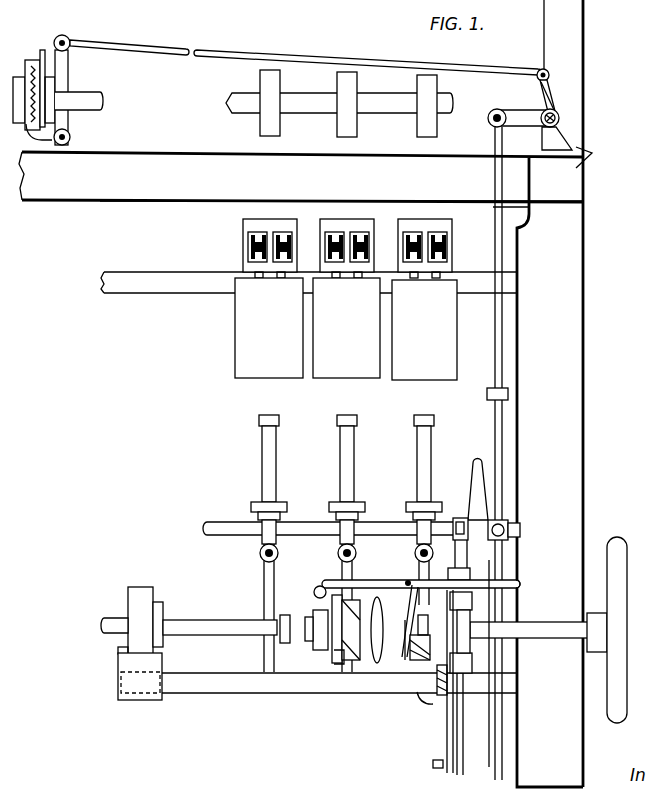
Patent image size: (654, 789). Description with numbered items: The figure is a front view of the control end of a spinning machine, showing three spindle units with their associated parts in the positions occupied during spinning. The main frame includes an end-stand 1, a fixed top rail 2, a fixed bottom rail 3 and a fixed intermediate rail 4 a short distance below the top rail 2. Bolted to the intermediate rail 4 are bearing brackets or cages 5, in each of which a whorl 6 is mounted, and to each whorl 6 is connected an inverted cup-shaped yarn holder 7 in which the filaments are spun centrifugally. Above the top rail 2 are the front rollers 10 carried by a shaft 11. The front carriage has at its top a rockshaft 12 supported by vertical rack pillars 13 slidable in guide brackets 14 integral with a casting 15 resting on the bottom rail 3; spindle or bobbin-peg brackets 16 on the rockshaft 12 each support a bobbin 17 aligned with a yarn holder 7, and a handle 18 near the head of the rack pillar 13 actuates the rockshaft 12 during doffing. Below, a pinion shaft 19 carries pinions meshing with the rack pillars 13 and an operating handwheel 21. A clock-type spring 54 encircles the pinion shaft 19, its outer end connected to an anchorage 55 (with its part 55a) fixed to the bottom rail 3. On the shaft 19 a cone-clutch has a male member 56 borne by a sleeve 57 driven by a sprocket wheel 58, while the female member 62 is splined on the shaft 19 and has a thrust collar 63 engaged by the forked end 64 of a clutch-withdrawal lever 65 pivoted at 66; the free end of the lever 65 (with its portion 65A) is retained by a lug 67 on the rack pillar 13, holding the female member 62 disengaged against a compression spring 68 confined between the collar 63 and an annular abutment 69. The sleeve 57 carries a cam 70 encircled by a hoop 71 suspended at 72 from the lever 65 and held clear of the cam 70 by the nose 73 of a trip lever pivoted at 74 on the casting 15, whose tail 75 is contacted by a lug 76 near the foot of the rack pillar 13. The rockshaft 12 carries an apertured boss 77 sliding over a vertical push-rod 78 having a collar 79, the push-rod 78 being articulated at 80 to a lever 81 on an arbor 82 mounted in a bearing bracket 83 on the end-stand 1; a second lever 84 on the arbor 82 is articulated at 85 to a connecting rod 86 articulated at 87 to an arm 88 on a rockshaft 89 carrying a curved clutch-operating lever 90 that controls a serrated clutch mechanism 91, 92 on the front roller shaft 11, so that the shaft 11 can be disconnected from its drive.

The end-stand 1 is at (592, 157).
The top rail 2 is at (151, 194).
The bottom rail 3 is at (167, 694).
The intermediate rail 4 is at (197, 283).
The bearing bracket or cage 5 is at (273, 227).
The whorl 6 is at (287, 246).
The yarn holder 7 is at (270, 367).
The front rollers 10 is at (268, 125).
The front roller shaft 11 is at (233, 105).
The rockshaft 12 is at (225, 525).
The rack pillar 13 is at (470, 642).
The guide bracket 14 is at (472, 601).
The casting 15 is at (455, 673).
The spindle or bobbin-peg bracket 16 is at (282, 520).
The bobbin 17 is at (270, 446).
The handle 18 is at (474, 468).
The pinion shaft 19 is at (113, 617).
The operating handwheel 21 is at (617, 585).
The spring 54 is at (138, 598).
The anchorage 55 is at (118, 678).
The base block part 55a is at (122, 655).
The male clutch member 56 is at (352, 664).
The boss or sleeve 57 is at (401, 648).
The sprocket wheel 58 is at (376, 665).
The female clutch member 62 is at (338, 666).
The thrust collar 63 is at (334, 664).
The forked end 64 is at (312, 612).
The clutch-withdrawal lever 65 is at (367, 580).
The clamp 65A is at (462, 571).
The pivot 66 is at (318, 586).
The lug 67 is at (512, 578).
The compression spring 68 is at (313, 641).
The annular abutment 69 is at (285, 644).
The cam 70 is at (413, 661).
The hoop 71 is at (406, 634).
The pivot 72 is at (407, 581).
The nose of trip lever 73 is at (420, 660).
The pivot 74 is at (428, 704).
The tail of trip lever 75 is at (437, 672).
The lug 76 is at (448, 770).
The apertured boss 77 is at (510, 523).
The push-rod 78 is at (498, 353).
The collar 79 is at (505, 393).
The articulation 80 is at (491, 124).
The lever 81 is at (533, 122).
The arbor 82 is at (545, 110).
The bearing bracket 83 is at (557, 143).
The second lever 84 is at (553, 99).
The articulation 85 is at (549, 70).
The connecting rod 86 is at (168, 50).
The articulation 87 is at (70, 38).
The arm 88 is at (69, 80).
The rockshaft 89 is at (72, 133).
The clutch-operating lever 90 is at (33, 128).
The serrated clutch mechanism 91 is at (46, 52).
The serrated clutch mechanism 92 is at (31, 60).